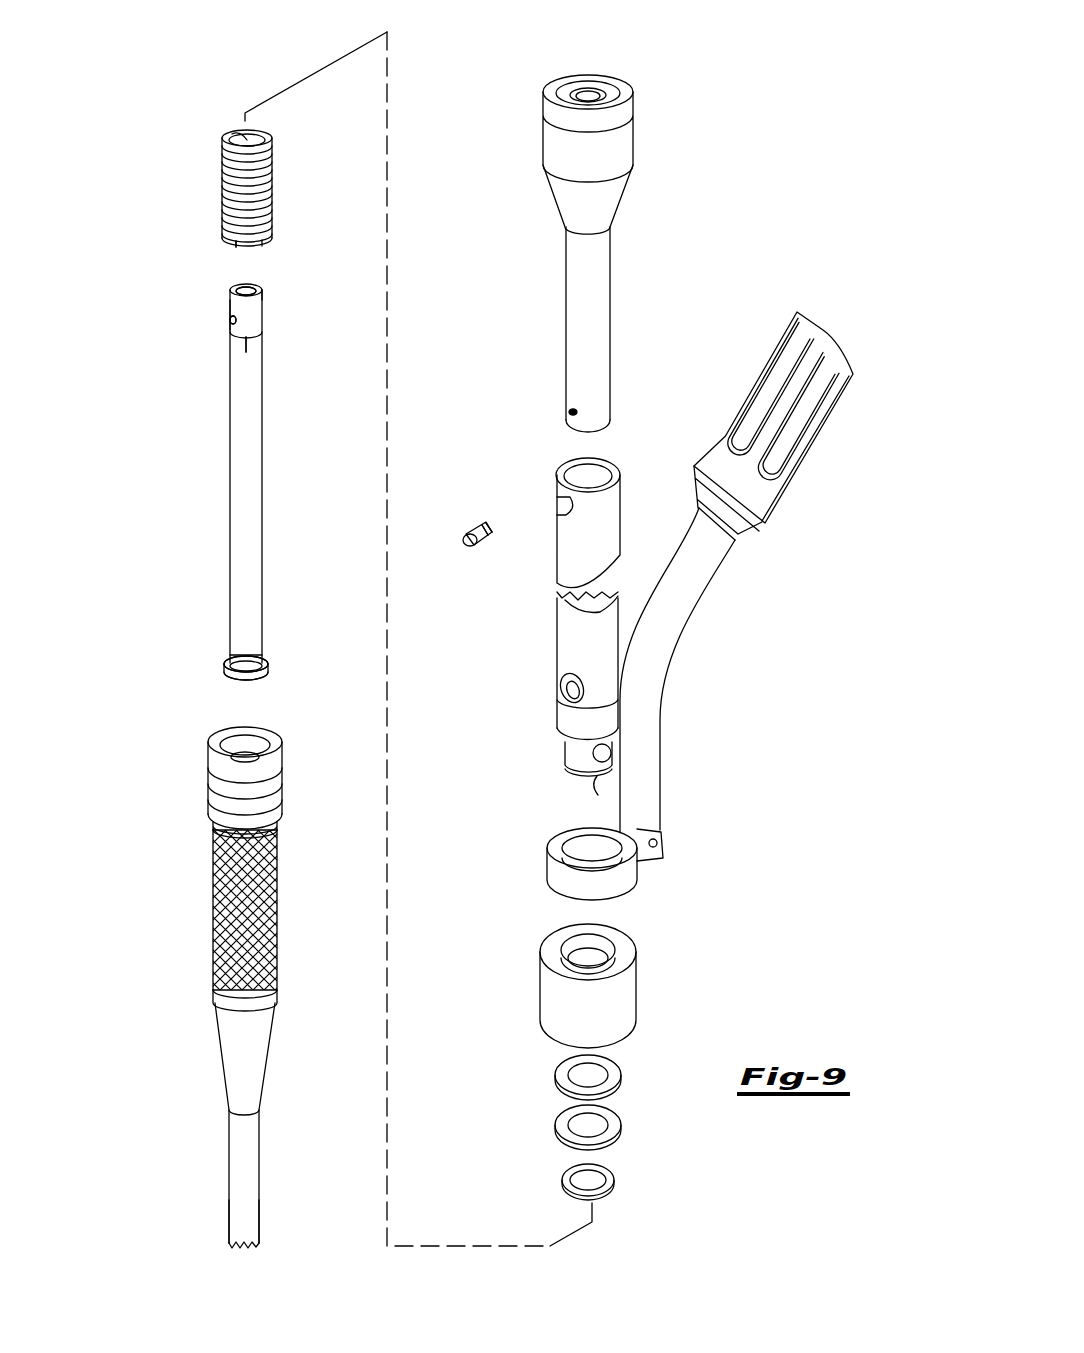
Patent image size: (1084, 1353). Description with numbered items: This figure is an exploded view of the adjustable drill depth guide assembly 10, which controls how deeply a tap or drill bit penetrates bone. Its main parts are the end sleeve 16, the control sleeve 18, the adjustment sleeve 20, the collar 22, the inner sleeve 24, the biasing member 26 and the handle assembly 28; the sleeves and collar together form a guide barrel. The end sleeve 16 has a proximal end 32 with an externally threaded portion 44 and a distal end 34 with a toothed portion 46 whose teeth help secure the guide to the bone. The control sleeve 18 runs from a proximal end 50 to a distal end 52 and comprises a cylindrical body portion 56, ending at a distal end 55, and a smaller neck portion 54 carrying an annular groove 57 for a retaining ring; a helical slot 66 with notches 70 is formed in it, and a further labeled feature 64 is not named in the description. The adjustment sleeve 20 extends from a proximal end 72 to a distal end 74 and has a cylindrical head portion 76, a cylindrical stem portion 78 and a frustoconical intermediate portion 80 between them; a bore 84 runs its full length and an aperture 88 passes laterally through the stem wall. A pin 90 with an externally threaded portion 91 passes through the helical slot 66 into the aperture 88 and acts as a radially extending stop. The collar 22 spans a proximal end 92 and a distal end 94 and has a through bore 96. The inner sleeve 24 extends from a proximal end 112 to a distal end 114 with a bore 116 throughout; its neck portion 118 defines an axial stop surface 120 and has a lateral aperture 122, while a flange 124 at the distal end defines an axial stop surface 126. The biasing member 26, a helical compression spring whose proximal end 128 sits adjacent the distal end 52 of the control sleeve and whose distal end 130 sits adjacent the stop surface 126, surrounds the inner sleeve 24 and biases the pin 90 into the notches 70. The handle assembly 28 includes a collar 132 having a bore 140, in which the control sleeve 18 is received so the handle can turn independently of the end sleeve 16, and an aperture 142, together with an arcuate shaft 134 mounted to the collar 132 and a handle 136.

The adjustable drill depth guide assembly 10 is at (752, 142).
The end sleeve 16 is at (223, 982).
The control sleeve 18 is at (574, 618).
The adjustment sleeve 20 is at (586, 232).
The collar 22 is at (623, 962).
The inner sleeve 24 is at (224, 507).
The biasing member 26 is at (212, 196).
The handle assembly 28 is at (700, 612).
The proximal end 32 is at (212, 740).
The distal end 34 is at (258, 1240).
The externally threaded portion 44 is at (215, 780).
The toothed portion 46 is at (235, 1253).
The proximal end 50 is at (565, 475).
The distal end 52 is at (594, 797).
The neck portion 54 is at (567, 748).
The distal end 55 is at (610, 755).
The body portion 56 is at (610, 510).
The annular groove 57 is at (568, 767).
The aperture 64 is at (563, 688).
The helical slot 66 is at (560, 593).
The notches 70 is at (612, 632).
The proximal end 72 is at (556, 92).
The distal end 74 is at (594, 438).
The head portion 76 is at (552, 146).
The stem portion 78 is at (603, 272).
The intermediate portion 80 is at (615, 200).
The bore 84 is at (590, 92).
The aperture 88 is at (569, 412).
The pin 90 is at (462, 524).
The externally threaded portion 91 is at (486, 522).
The proximal end 92 is at (550, 948).
The distal end 94 is at (562, 1046).
The bore 96 is at (596, 947).
The proximal end 112 is at (258, 292).
The distal end 114 is at (262, 678).
The bore 116 is at (240, 292).
The neck portion 118 is at (260, 308).
The axial stop surface 120 is at (262, 340).
The aperture 122 is at (233, 322).
The flange 124 is at (225, 668).
The axial stop surface 126 is at (264, 662).
The proximal end 128 is at (232, 136).
The distal end 130 is at (243, 247).
The collar 132 is at (633, 878).
The shaft 134 is at (650, 716).
The handle 136 is at (776, 464).
The bore 140 is at (590, 848).
The aperture 142 is at (660, 844).